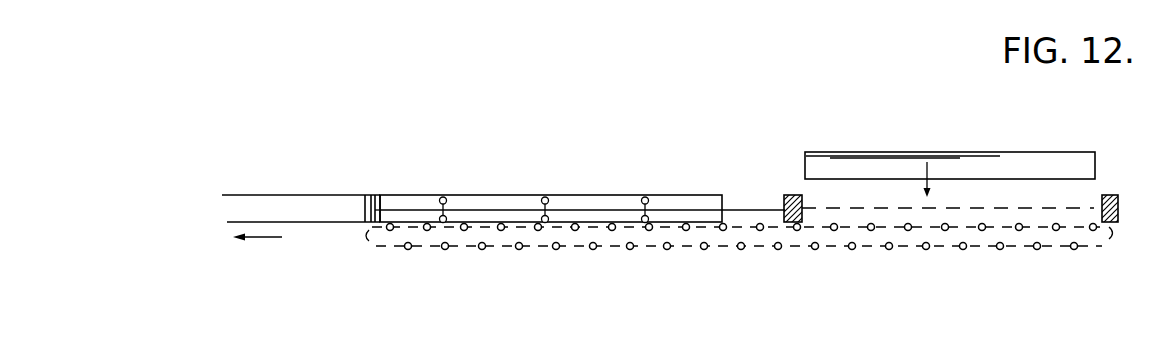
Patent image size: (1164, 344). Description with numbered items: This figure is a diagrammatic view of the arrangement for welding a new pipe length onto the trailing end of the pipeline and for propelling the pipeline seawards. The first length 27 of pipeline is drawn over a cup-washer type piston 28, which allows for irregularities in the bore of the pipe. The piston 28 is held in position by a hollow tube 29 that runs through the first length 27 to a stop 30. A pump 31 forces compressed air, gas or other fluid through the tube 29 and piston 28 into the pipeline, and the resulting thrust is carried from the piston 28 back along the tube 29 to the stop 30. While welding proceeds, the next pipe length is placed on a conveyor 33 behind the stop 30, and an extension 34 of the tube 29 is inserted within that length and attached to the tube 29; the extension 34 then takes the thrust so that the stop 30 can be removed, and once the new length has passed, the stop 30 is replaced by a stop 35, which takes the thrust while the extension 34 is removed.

The first length of pipeline 27 is at (347, 224).
The cup-washer type piston 28 is at (359, 204).
The hollow tube 29 is at (498, 211).
The stop 30 is at (787, 196).
The pump 31 is at (398, 189).
The conveyor 33 is at (816, 248).
The extension of the tube 34 is at (853, 197).
The stop 35 is at (1102, 200).